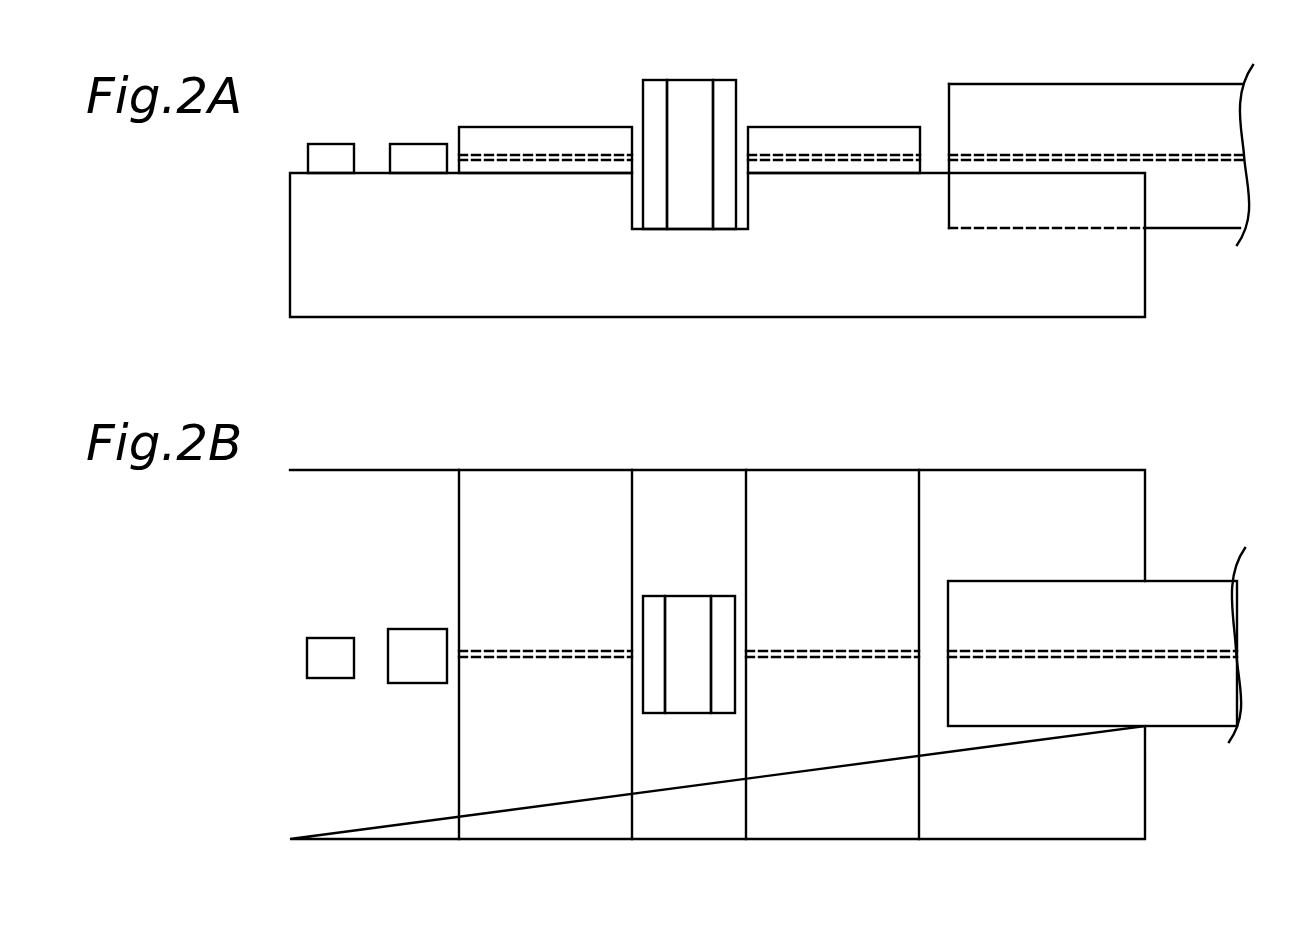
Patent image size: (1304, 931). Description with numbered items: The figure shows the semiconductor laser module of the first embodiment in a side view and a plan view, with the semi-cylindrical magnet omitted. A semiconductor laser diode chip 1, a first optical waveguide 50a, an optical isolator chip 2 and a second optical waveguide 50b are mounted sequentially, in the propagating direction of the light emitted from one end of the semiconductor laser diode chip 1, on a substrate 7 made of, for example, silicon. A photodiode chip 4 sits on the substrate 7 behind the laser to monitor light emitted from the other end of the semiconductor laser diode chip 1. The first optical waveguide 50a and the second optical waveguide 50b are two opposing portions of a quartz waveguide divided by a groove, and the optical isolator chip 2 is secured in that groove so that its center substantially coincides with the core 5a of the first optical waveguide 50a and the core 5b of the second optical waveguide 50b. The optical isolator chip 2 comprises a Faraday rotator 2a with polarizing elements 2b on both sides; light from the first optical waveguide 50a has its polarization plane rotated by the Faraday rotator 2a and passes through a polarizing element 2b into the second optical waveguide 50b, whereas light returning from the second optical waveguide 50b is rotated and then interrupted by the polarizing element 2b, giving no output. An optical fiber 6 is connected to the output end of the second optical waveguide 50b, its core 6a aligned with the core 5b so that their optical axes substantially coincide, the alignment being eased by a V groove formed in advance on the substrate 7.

In FIG. 2A, the semiconductor laser diode chip 1 is at (419, 153).
In FIG. 2B, the semiconductor laser diode chip 1 is at (417, 645).
In FIG. 2A, the optical isolator chip 2 is at (755, 30).
In FIG. 2B, the optical isolator chip 2 is at (623, 432).
In FIG. 2A, the Faraday rotator 2a is at (688, 92).
In FIG. 2B, the Faraday rotator 2a is at (688, 605).
In FIG. 2A, the polarizing elements 2b is at (655, 92).
In FIG. 2B, the polarizing elements 2b is at (653, 605).
In FIG. 2A, the photodiode chip 4 is at (331, 153).
In FIG. 2B, the photodiode chip 4 is at (330, 650).
In FIG. 2A, the core of the first optical waveguide 5a is at (582, 155).
In FIG. 2B, the core of the first optical waveguide 5a is at (570, 650).
In FIG. 2A, the core of the second optical waveguide 5b is at (884, 155).
In FIG. 2B, the core of the second optical waveguide 5b is at (862, 650).
In FIG. 2A, the optical fiber 6 is at (1010, 83).
In FIG. 2B, the optical fiber 6 is at (988, 580).
In FIG. 2A, the core of the optical fiber 6a is at (1097, 155).
In FIG. 2B, the core of the optical fiber 6a is at (1078, 650).
In FIG. 2A, the substrate 7 is at (459, 290).
In FIG. 2B, the substrate 7 is at (367, 481).
In FIG. 2A, the first optical waveguide 50a is at (483, 135).
In FIG. 2B, the first optical waveguide 50a is at (498, 495).
In FIG. 2A, the second optical waveguide 50b is at (785, 135).
In FIG. 2B, the second optical waveguide 50b is at (792, 495).